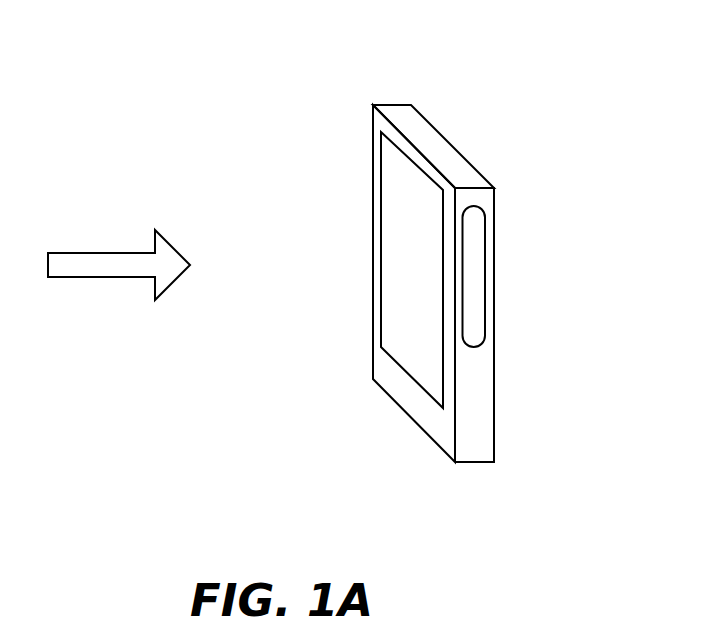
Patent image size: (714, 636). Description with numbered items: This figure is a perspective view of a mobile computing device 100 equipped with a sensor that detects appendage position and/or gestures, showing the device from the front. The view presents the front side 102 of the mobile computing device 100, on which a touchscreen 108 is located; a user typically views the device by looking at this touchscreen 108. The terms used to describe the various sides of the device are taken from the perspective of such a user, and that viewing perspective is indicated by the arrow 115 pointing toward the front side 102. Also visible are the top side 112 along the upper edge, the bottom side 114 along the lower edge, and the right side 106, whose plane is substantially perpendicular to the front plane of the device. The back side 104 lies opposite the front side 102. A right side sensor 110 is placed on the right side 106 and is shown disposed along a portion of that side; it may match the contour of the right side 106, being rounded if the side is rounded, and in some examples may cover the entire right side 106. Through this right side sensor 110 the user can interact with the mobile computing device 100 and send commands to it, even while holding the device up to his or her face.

The mobile computing device 100 is at (311, 113).
The front side 102 is at (388, 372).
The back side 104 is at (495, 368).
The right side 106 is at (478, 403).
The touchscreen 108 is at (401, 245).
The right side sensor 110 is at (480, 282).
The top side 112 is at (455, 168).
The bottom side 114 is at (472, 465).
The arrow 115 is at (93, 252).